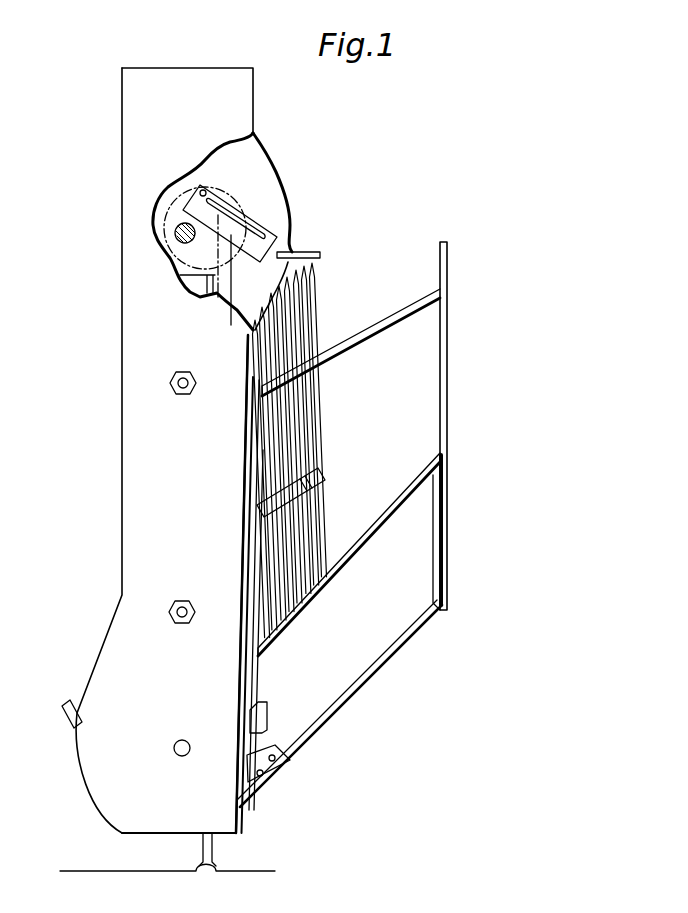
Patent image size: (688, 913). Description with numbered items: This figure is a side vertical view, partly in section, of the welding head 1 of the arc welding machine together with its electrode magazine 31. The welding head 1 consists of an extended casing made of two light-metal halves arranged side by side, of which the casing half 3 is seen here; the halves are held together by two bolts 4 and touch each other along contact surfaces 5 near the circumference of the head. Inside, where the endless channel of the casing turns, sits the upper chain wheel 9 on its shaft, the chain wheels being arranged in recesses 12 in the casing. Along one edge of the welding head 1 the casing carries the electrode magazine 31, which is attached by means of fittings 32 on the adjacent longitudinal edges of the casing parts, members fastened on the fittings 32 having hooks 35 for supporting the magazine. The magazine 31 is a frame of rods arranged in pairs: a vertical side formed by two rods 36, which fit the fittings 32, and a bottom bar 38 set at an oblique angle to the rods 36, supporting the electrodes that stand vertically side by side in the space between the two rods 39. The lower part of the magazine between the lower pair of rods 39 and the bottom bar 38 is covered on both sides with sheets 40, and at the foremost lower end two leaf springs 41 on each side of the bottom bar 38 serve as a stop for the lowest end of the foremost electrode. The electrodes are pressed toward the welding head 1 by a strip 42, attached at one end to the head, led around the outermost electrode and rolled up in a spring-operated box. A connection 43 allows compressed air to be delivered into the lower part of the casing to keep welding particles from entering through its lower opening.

The welding head 1 is at (164, 450).
The casing half 3 is at (172, 527).
The bolts 4 is at (172, 384).
The contact surfaces 5 is at (272, 172).
The upper chain wheel 9 is at (170, 198).
The recesses 12 is at (173, 265).
The electrode magazine 31 is at (448, 338).
The fittings 32 is at (253, 690).
The hooks 35 is at (265, 722).
The vertical side rods of magazine 36 is at (255, 662).
The bottom bar 38 is at (375, 673).
The rods 39 is at (383, 318).
The sheets 40 is at (408, 557).
The leaf springs 41 is at (250, 783).
The strip 42 is at (285, 505).
The connection 43 is at (70, 717).